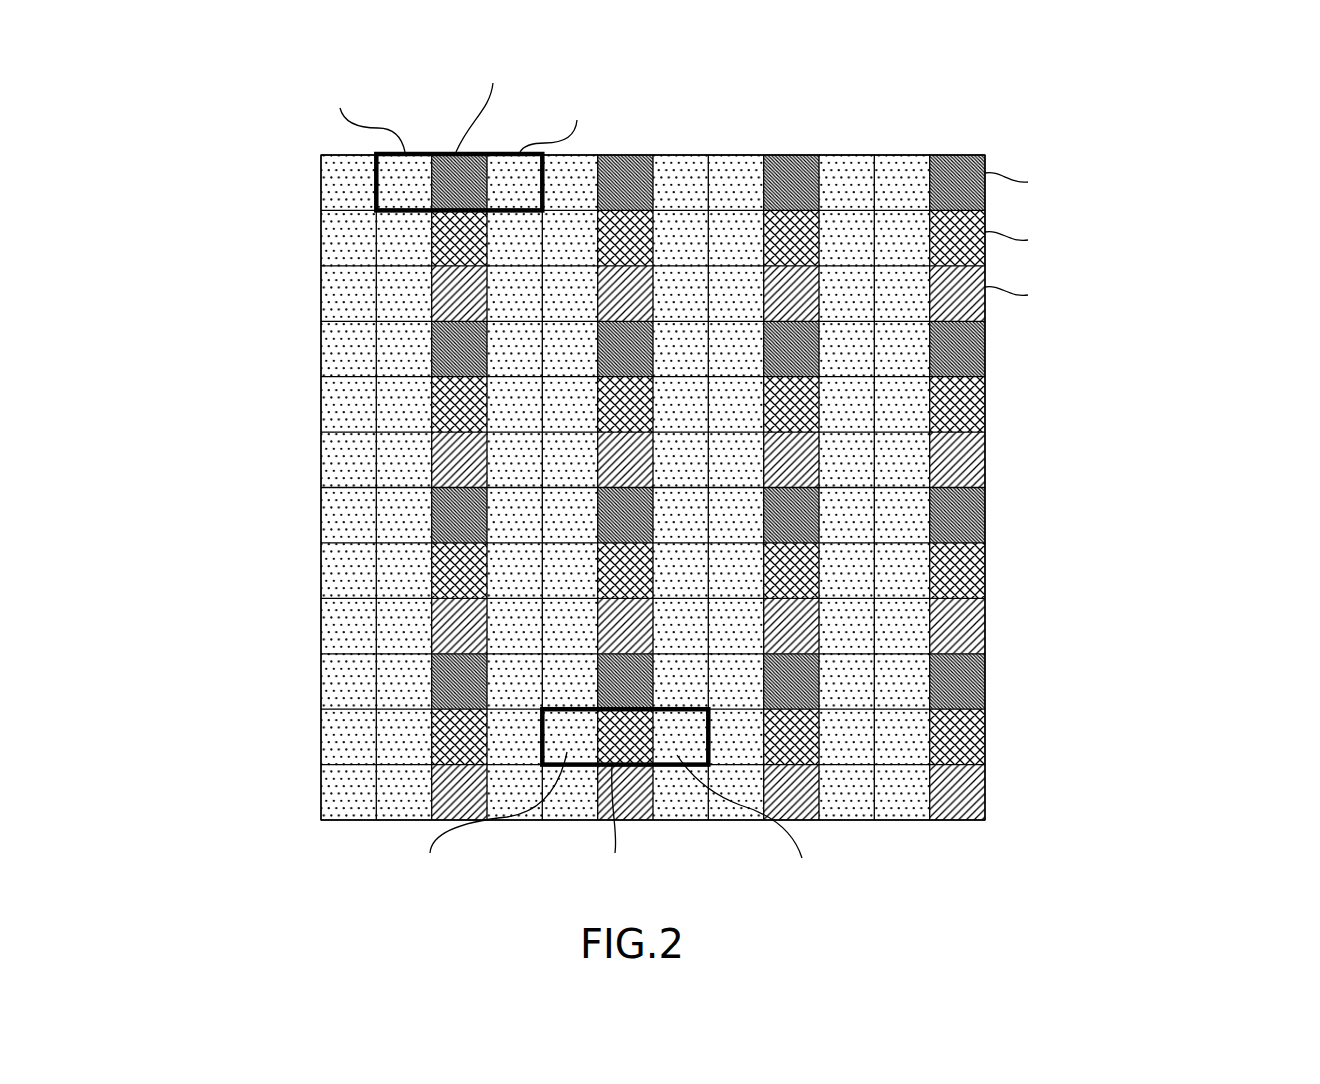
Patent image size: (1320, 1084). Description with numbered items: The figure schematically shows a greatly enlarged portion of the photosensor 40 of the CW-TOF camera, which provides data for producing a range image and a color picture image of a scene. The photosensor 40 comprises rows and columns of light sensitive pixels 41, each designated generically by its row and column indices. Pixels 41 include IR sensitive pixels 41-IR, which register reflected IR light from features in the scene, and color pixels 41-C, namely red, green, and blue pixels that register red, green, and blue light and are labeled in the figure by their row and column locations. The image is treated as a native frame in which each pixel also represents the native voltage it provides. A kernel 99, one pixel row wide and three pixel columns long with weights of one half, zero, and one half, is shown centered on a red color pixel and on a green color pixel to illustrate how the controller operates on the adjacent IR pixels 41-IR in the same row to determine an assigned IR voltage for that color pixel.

The photosensor 40 is at (920, 92).
The pixels 41 is at (456, 801).
The color pixels 41-C is at (1114, 323).
The IR sensitive pixels 41-IR is at (902, 683).
The kernel 99 is at (578, 702).